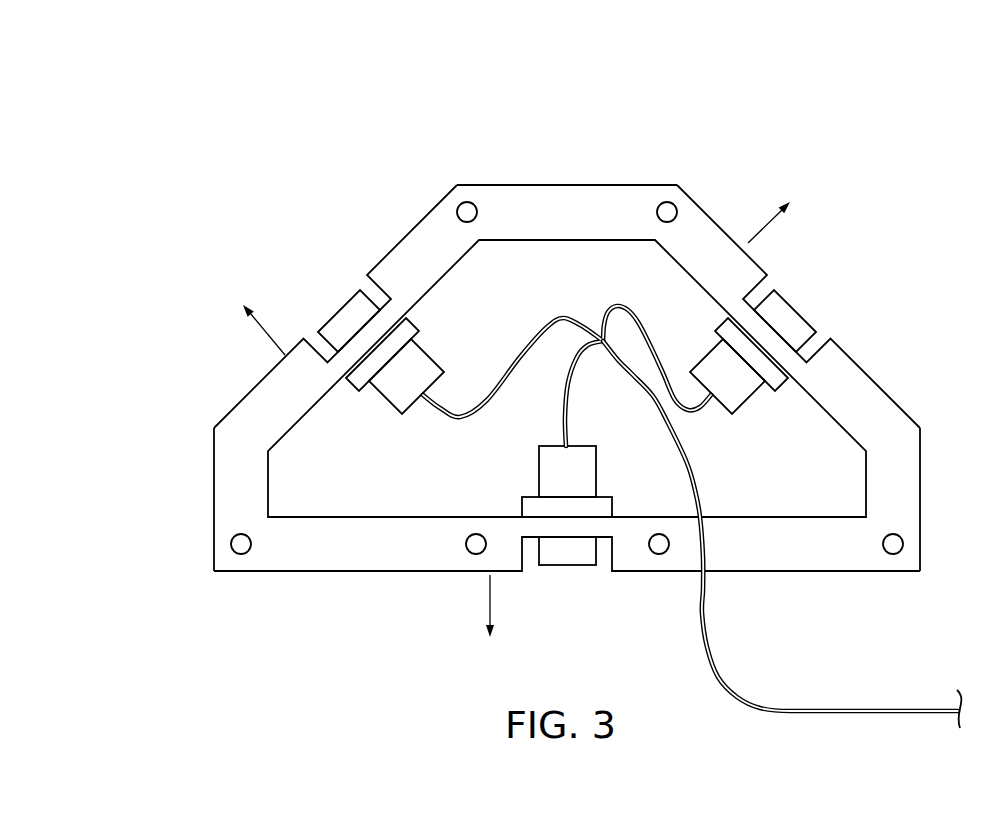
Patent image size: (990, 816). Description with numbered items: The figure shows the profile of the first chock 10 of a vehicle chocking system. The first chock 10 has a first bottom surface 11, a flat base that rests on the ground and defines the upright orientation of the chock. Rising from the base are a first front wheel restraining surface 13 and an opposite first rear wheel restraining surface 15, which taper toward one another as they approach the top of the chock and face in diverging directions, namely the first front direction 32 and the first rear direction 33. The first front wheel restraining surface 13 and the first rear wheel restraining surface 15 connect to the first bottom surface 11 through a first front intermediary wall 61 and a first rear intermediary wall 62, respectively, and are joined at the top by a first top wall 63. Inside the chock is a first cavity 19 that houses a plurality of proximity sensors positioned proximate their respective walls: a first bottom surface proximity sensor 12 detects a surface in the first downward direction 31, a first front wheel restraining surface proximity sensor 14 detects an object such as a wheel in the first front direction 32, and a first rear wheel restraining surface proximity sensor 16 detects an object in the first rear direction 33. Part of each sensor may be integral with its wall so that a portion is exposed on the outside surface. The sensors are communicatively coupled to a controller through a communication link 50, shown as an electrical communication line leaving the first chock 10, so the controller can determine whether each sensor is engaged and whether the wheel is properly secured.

The first chock 10 is at (308, 150).
The first bottom surface 11 is at (302, 572).
The first bottom surface proximity sensor 12 is at (562, 566).
The first front wheel restraining surface 13 is at (230, 413).
The first front wheel restraining surface proximity sensor 14 is at (340, 308).
The first rear wheel restraining surface 15 is at (881, 389).
The first rear wheel restraining surface proximity sensor 16 is at (799, 310).
The first cavity 19 is at (558, 302).
The first downward direction 31 is at (490, 594).
The first front direction 32 is at (262, 330).
The first rear direction 33 is at (766, 226).
The communication link 50 is at (748, 697).
The first front intermediary wall 61 is at (214, 492).
The first rear intermediary wall 62 is at (920, 490).
The first top wall 63 is at (596, 185).